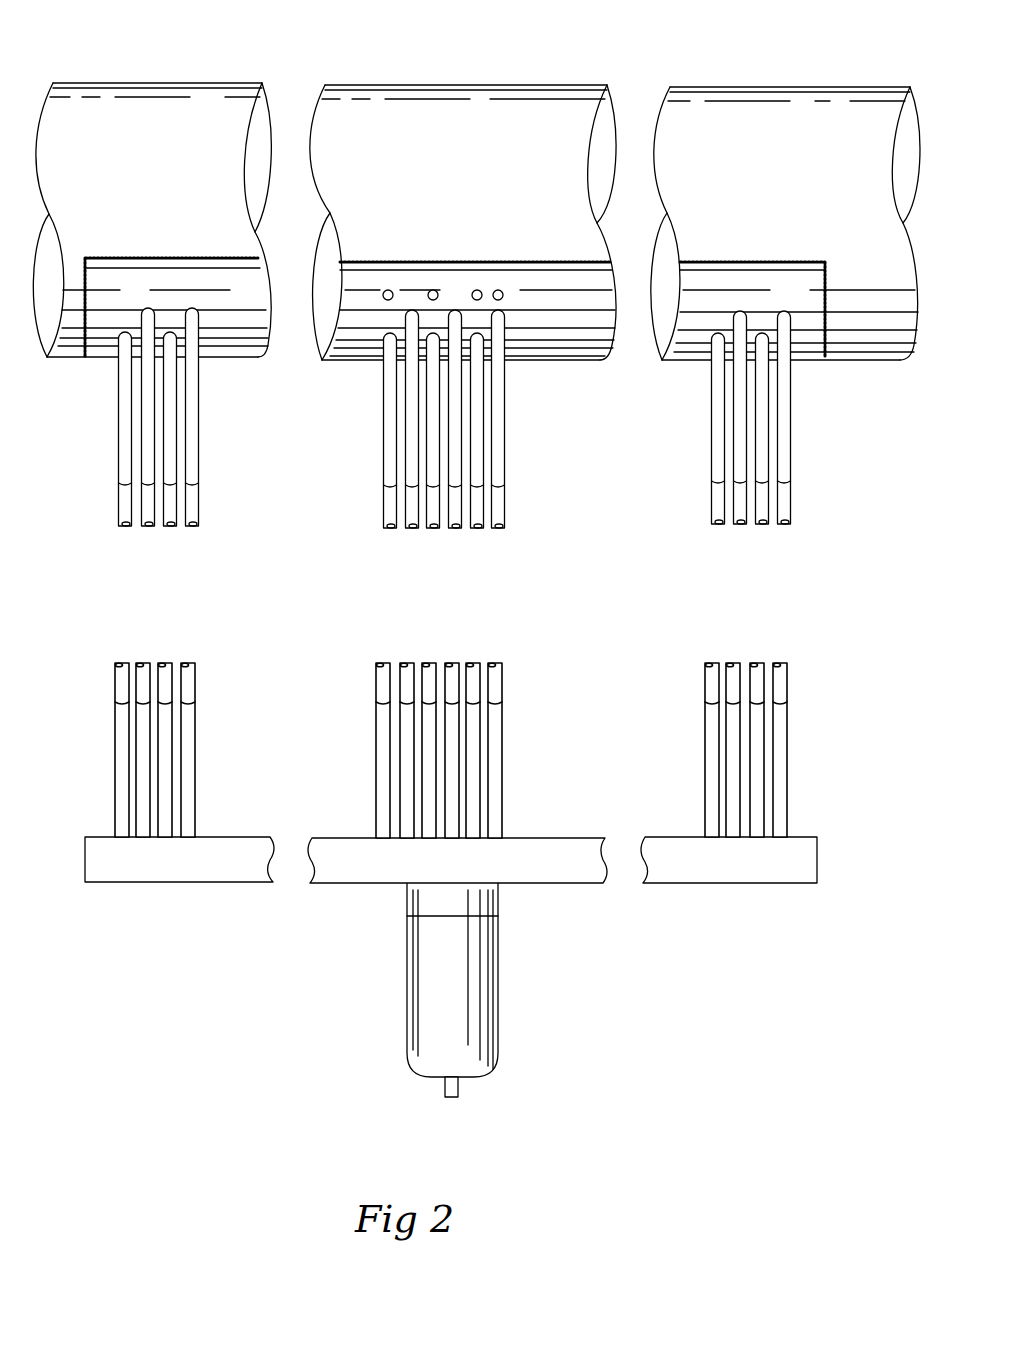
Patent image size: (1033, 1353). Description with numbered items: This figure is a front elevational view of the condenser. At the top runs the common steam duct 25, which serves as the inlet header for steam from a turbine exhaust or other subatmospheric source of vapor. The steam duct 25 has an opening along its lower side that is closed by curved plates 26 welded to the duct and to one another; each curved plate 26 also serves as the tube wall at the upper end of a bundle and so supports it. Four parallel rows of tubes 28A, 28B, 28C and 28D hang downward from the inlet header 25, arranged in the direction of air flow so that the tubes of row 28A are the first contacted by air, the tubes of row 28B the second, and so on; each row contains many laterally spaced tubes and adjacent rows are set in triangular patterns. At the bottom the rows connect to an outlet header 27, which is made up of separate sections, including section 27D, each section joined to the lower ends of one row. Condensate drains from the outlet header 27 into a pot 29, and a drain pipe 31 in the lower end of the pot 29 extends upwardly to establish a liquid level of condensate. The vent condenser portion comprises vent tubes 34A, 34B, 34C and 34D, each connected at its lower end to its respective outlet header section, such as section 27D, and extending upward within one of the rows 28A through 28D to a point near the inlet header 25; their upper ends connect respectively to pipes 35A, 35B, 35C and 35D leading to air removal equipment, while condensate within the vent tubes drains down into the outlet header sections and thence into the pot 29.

The steam duct 25 is at (366, 88).
The curved plates 26 is at (545, 356).
The outlet header 27 is at (84, 870).
The outlet header section 27D is at (357, 867).
The first row of tubes 28A is at (125, 513).
The second row of tubes 28B is at (148, 517).
The third row of tubes 28C is at (125, 410).
The fourth row of tubes 28D is at (148, 437).
The pot 29 is at (498, 980).
The drain pipe 31 is at (458, 1088).
The vent tube 34A is at (432, 457).
The vent tube 34B is at (477, 472).
The vent tube 34C is at (388, 420).
The vent tube 34D is at (498, 438).
The pipe 35A is at (430, 290).
The pipe 35B is at (477, 290).
The pipe 35C is at (387, 290).
The pipe 35D is at (497, 290).